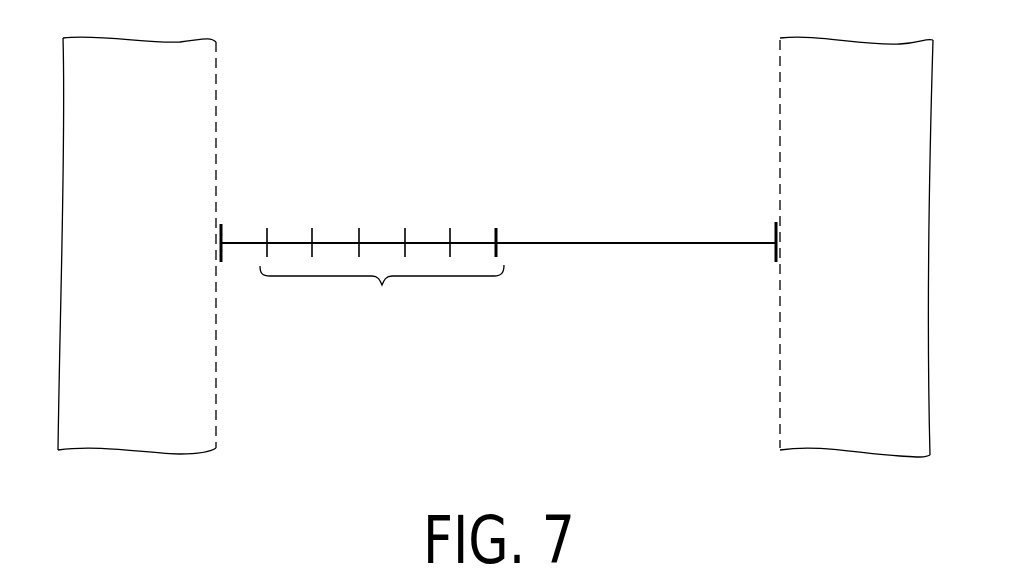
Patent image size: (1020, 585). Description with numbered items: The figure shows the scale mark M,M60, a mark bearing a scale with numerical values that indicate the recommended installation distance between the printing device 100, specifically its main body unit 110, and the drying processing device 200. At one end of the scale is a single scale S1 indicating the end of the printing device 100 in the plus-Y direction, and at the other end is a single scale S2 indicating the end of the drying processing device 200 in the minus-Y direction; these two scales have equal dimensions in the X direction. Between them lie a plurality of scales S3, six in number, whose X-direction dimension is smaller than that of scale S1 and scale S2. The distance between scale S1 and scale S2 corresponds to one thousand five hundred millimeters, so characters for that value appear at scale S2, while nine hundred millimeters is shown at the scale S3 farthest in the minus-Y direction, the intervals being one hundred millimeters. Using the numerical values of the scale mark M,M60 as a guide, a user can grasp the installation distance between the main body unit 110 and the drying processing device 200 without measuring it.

The drying processing device 200 is at (208, 372).
The main body unit 110 is at (785, 370).
The printing device 100 is at (690, 353).
The scale S1 is at (774, 258).
The scale S2 is at (221, 258).
The plurality of scales S3 is at (382, 271).
The scale mark M,M60 is at (493, 178).